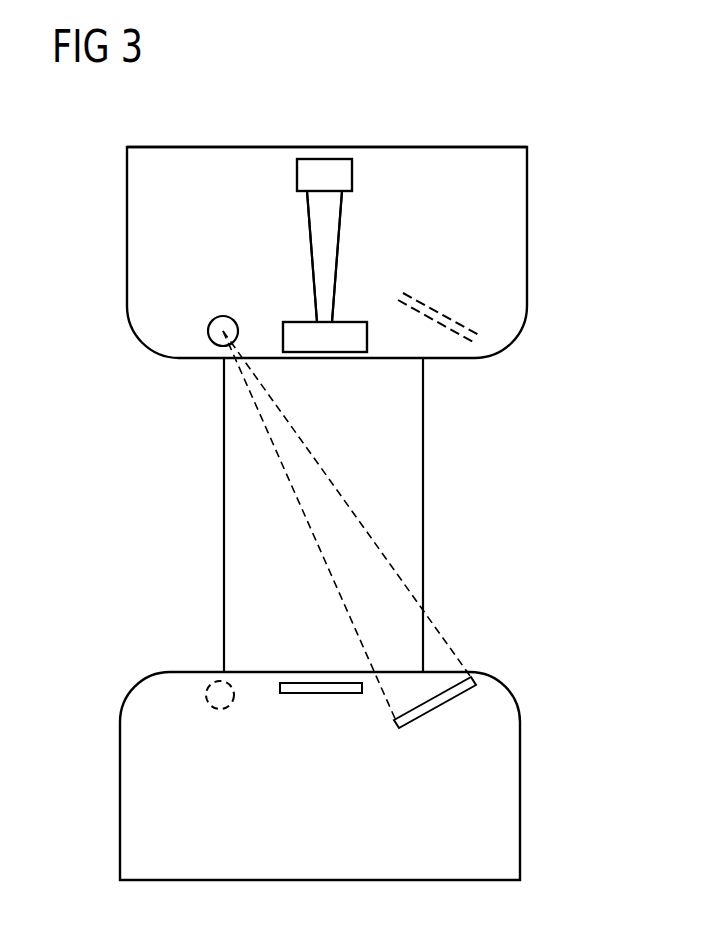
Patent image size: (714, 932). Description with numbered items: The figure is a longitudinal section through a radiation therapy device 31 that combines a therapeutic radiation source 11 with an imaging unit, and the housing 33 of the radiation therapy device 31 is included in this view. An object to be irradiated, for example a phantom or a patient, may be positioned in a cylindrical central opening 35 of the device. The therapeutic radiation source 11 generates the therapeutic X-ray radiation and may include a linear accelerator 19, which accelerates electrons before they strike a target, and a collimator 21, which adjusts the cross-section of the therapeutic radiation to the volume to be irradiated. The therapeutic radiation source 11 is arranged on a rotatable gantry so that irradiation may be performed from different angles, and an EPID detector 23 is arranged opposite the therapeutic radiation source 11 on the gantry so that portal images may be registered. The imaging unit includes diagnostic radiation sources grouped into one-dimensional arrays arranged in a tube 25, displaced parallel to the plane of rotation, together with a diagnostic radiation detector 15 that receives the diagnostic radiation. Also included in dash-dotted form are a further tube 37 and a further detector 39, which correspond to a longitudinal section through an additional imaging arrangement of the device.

The therapeutic radiation source 11 is at (288, 241).
The diagnostic radiation detector 15 is at (441, 710).
The linear accelerator 19 is at (340, 221).
The collimator 21 is at (348, 322).
The EPID detector 23 is at (323, 696).
The tube 25 is at (218, 316).
The radiation therapy device 31 is at (100, 204).
The housing 33 is at (377, 147).
The cylindrical central opening 35 is at (508, 421).
The further tube 37 is at (210, 709).
The further detector 39 is at (452, 319).